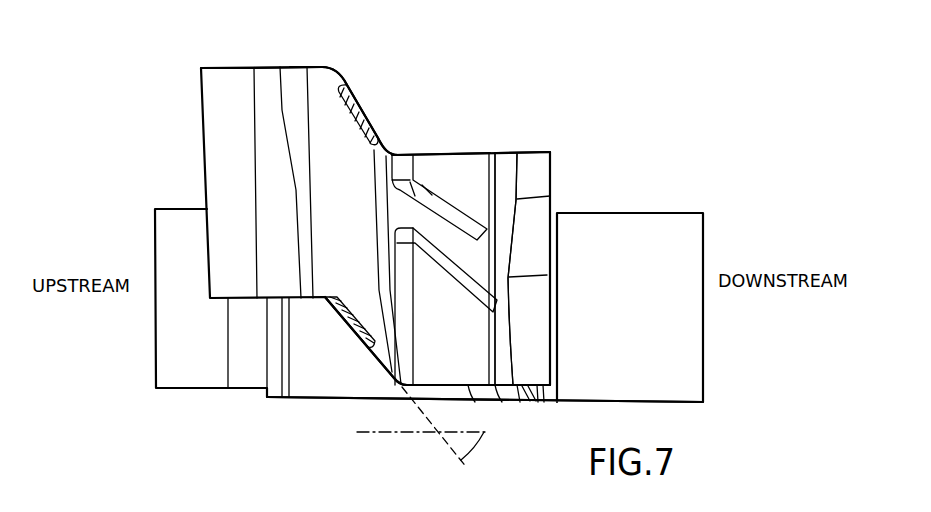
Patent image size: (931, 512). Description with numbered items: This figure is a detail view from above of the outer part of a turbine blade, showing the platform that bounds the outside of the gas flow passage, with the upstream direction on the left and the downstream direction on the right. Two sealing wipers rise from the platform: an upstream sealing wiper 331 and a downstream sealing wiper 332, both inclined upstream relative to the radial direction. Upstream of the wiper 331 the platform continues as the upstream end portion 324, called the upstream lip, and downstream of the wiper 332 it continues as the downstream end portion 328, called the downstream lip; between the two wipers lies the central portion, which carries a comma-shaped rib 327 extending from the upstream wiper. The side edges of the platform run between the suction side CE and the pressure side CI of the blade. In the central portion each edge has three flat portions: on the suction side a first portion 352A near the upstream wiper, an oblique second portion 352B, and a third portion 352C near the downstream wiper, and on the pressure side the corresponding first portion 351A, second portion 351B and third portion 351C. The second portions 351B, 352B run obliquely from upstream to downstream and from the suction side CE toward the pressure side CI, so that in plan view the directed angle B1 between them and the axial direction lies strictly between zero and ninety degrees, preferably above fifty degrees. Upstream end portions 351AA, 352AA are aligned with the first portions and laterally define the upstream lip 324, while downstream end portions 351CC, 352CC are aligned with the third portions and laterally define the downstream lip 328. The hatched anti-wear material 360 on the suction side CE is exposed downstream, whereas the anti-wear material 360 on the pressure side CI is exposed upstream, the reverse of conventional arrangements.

The upstream end portion 324 is at (220, 116).
The upstream sealing wiper 331 is at (300, 147).
The upstream end portion of second side edge 352AA is at (218, 67).
The first portion of second side edge 352A is at (311, 66).
The second portion of second side edge 352B is at (348, 82).
The third portion of second side edge 352C is at (474, 154).
The downstream end portion of second side edge 352CC is at (538, 153).
The anti-wear material 360 is at (363, 111).
The comma-shaped rib 327 is at (430, 222).
The downstream end portion 328 is at (541, 177).
The downstream sealing wiper 332 is at (500, 255).
The upstream end portion of first side edge 351AA is at (229, 300).
The first portion of first side edge 351A is at (312, 300).
The second portion of first side edge 351B is at (365, 346).
The third portion of first side edge 351C is at (472, 395).
The downstream end portion of first side edge 351CC is at (543, 402).
The directed angle B1 is at (428, 427).
The suction side CE is at (300, 42).
The pressure side CI is at (293, 444).